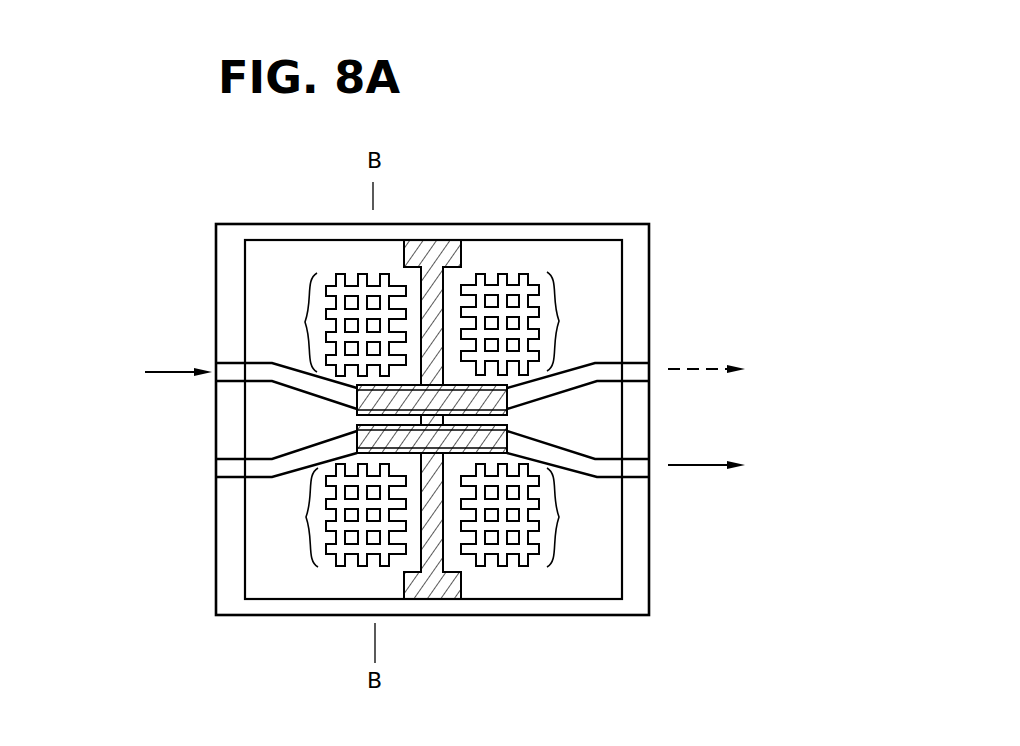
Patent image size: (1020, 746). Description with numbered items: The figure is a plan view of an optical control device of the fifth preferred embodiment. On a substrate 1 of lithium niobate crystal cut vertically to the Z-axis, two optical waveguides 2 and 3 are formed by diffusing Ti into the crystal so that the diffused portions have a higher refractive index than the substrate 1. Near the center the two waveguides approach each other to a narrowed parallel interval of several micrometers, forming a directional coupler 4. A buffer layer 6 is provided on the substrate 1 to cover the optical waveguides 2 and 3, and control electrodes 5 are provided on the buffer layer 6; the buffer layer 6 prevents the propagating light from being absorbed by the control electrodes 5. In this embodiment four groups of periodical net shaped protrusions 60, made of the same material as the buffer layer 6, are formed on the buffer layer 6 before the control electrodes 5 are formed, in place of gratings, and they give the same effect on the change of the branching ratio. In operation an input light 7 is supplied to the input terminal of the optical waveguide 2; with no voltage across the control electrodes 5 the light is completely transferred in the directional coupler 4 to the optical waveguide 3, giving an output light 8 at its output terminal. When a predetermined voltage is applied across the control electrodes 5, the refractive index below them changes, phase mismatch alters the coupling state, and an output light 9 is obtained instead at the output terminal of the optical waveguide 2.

The substrate 1 is at (637, 242).
The optical waveguide 2 is at (277, 372).
The optical waveguide 3 is at (275, 469).
The directional coupler 4 is at (447, 415).
The control electrodes 5 is at (425, 252).
The buffer layer 6 is at (585, 580).
The periodical net shaped protrusions 60 is at (675, 560).
The input light 7 is at (173, 376).
The output light 8 is at (710, 470).
The output light 9 is at (708, 373).